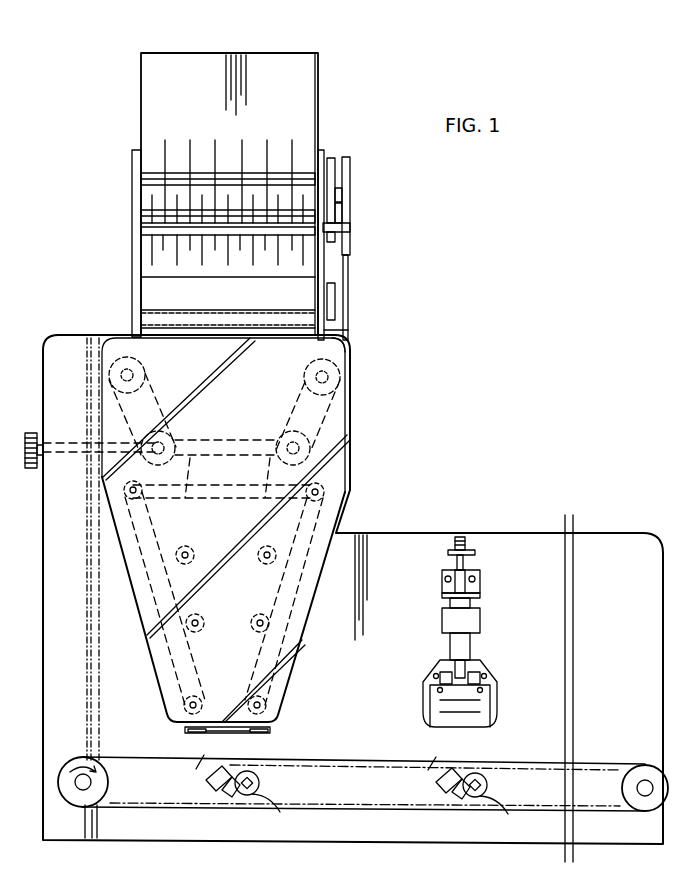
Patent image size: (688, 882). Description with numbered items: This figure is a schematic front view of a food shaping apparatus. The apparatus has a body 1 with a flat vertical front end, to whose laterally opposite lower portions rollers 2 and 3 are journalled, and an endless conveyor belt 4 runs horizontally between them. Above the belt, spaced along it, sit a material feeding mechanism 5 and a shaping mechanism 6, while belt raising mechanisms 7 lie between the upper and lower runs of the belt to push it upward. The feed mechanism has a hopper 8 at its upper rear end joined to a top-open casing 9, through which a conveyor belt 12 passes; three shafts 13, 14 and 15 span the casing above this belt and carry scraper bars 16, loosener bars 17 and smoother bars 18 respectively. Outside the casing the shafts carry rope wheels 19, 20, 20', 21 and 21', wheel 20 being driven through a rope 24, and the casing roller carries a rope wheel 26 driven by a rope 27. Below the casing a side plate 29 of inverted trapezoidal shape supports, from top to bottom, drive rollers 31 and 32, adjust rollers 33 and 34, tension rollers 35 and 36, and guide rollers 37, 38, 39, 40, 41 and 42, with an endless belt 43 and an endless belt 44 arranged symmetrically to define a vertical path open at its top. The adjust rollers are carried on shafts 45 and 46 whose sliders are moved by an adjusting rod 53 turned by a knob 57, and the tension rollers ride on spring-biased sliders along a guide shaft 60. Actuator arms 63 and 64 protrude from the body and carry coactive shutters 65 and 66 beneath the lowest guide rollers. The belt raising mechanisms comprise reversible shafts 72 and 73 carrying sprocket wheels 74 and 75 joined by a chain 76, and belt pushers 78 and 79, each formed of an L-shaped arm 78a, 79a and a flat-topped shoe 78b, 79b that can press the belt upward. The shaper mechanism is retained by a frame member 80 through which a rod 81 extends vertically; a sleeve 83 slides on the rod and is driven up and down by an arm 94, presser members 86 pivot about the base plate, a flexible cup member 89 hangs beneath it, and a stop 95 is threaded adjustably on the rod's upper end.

The body 1 is at (648, 540).
The roller 2 is at (83, 757).
The roller 3 is at (645, 765).
The conveyor belt 4 is at (345, 759).
The material feeding mechanism 5 is at (400, 304).
The shaping mechanism 6 is at (464, 647).
The belt raising mechanism 7 is at (194, 769).
The hopper 8 is at (236, 55).
The casing 9 is at (132, 236).
The conveyor belt 12 is at (141, 313).
The shaft 13 is at (194, 243).
The shaft 14 is at (228, 178).
The shaft 15 is at (270, 210).
The scraper bars 16 is at (303, 260).
The loosener bars 17 is at (190, 150).
The smoother bars 18 is at (240, 255).
The rope wheel 19 is at (350, 240).
The rope wheel 20 is at (368, 198).
The rope wheel 20' is at (340, 169).
The rope wheel 21 is at (364, 216).
The rope wheel 21' is at (363, 192).
The rope 24 is at (348, 290).
The rope wheel 26 is at (335, 283).
The rope 27 is at (335, 330).
The side plate 29 is at (350, 360).
The drive roller 31 is at (147, 366).
The drive roller 32 is at (304, 378).
The adjust roller 33 is at (168, 436).
The adjust roller 34 is at (282, 436).
The tension roller 35 is at (138, 500).
The tension roller 36 is at (325, 491).
The guide roller 37 is at (178, 562).
The guide roller 38 is at (272, 546).
The guide roller 39 is at (194, 633).
The guide roller 40 is at (259, 633).
The guide roller 41 is at (183, 704).
The guide roller 42 is at (268, 702).
The endless belt 43 is at (188, 458).
The endless belt 44 is at (262, 470).
The shaft 45 is at (150, 423).
The shaft 46 is at (337, 396).
The adjusting rod 53 is at (72, 440).
The knob 57 is at (30, 433).
The guide shaft 60 is at (238, 498).
The actuator arm 63 is at (188, 734).
The actuator arm 64 is at (268, 731).
The shutter 65 is at (210, 733).
The shutter 66 is at (247, 705).
The reversible shaft 72 is at (282, 812).
The reversible shaft 73 is at (510, 814).
The sprocket wheel 74 is at (260, 786).
The sprocket wheel 75 is at (488, 787).
The chain 76 is at (352, 810).
The belt pusher 78 is at (232, 803).
The L-shaped arm 78a is at (238, 797).
The shoe 78b is at (208, 788).
The belt pusher 79 is at (464, 798).
The L-shaped arm 79a is at (468, 799).
The shoe 79b is at (438, 788).
The frame member 80 is at (480, 596).
The rod 81 is at (457, 562).
The sleeve 83 is at (450, 647).
The presser members 86 is at (425, 712).
The flexible cup member 89 is at (461, 708).
The arm 94 is at (442, 624).
The stop 95 is at (475, 553).